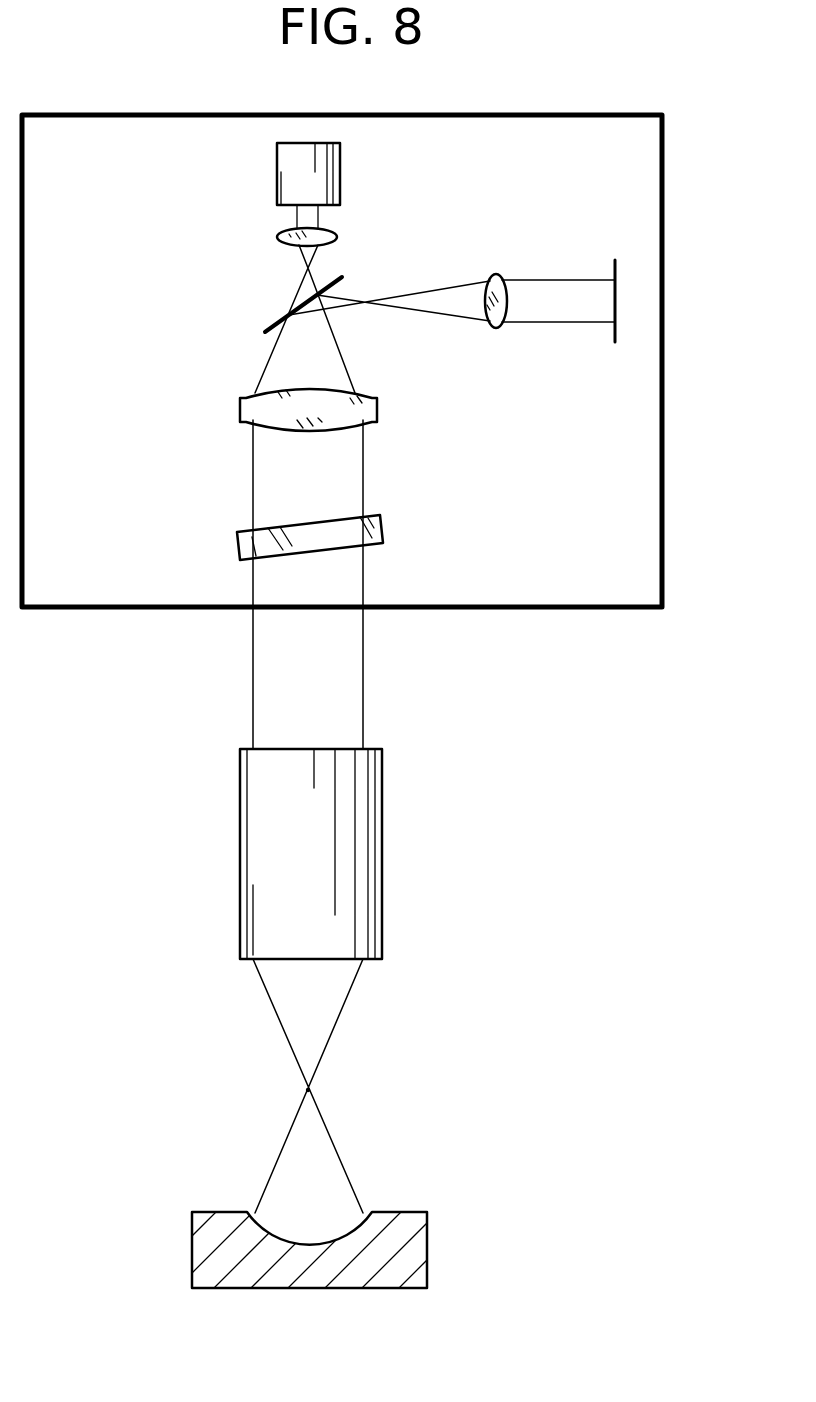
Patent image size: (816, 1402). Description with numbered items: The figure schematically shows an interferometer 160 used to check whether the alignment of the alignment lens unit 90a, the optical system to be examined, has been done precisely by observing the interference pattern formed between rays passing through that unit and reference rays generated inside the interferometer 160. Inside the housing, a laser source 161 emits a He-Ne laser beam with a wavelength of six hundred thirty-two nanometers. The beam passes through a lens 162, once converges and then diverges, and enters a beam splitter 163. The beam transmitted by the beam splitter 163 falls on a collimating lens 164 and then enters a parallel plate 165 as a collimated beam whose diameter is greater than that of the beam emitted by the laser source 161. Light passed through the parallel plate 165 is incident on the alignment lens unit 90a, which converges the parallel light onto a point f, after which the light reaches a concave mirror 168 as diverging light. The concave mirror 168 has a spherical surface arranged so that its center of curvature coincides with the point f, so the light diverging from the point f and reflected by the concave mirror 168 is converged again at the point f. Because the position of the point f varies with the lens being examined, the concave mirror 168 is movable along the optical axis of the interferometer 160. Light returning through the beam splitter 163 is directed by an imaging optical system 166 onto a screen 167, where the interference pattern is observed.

The interferometer 160 is at (713, 192).
The laser source 161 is at (340, 173).
The lens 162 is at (297, 234).
The beam splitter 163 is at (272, 322).
The collimating lens 164 is at (288, 420).
The parallel plate 165 is at (337, 538).
The imaging optical system 166 is at (503, 298).
The screen 167 is at (612, 337).
The alignment lens unit 90a is at (382, 854).
The point f is at (310, 1090).
The concave mirror 168 is at (427, 1250).